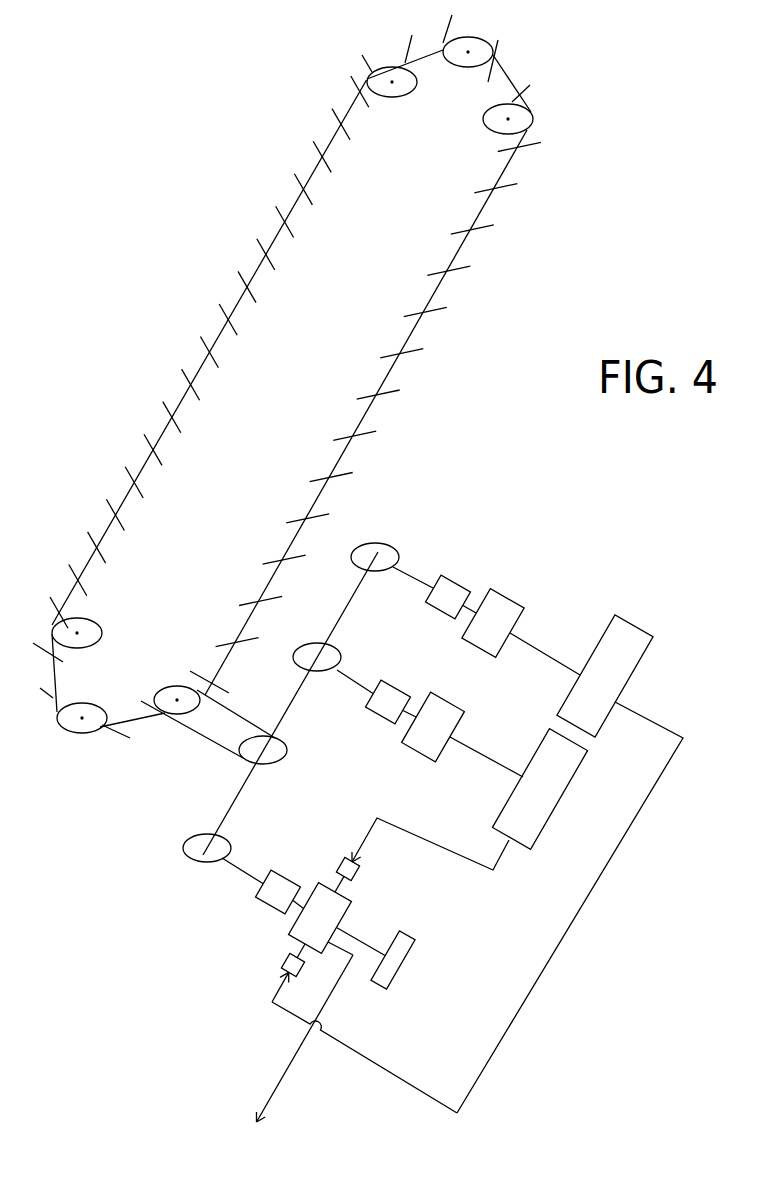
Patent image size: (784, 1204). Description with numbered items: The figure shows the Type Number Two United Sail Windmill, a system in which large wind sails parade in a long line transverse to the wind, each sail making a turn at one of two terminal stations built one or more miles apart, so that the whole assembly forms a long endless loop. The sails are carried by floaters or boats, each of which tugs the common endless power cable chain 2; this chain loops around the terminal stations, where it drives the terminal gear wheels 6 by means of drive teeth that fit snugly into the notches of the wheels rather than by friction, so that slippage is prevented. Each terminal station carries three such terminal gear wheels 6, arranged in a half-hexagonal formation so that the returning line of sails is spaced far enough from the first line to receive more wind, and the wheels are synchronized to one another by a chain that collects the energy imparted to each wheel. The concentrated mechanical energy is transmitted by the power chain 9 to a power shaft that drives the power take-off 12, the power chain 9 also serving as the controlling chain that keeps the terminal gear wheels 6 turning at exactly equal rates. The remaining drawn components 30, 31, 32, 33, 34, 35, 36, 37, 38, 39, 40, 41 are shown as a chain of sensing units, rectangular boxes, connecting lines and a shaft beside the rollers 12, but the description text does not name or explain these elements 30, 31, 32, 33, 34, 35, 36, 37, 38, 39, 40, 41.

The power cable chain 2 is at (257, 270).
The terminal gear wheel 6 is at (182, 708).
The power chain 9 is at (240, 720).
The power take-off 12 is at (363, 562).
The sensors 30 is at (436, 600).
The amplifier circuit 31 is at (503, 602).
The comparator unit 32 is at (624, 628).
The amplifier circuit 33 is at (420, 743).
The control circuit 34 is at (508, 812).
The control unit 35 is at (300, 928).
The input junction 36 is at (342, 857).
The feedback junction 37 is at (284, 972).
The display unit 38 is at (402, 956).
The signal line 39 is at (493, 870).
The feedback line 40 is at (585, 908).
The output shaft 41 is at (290, 1068).